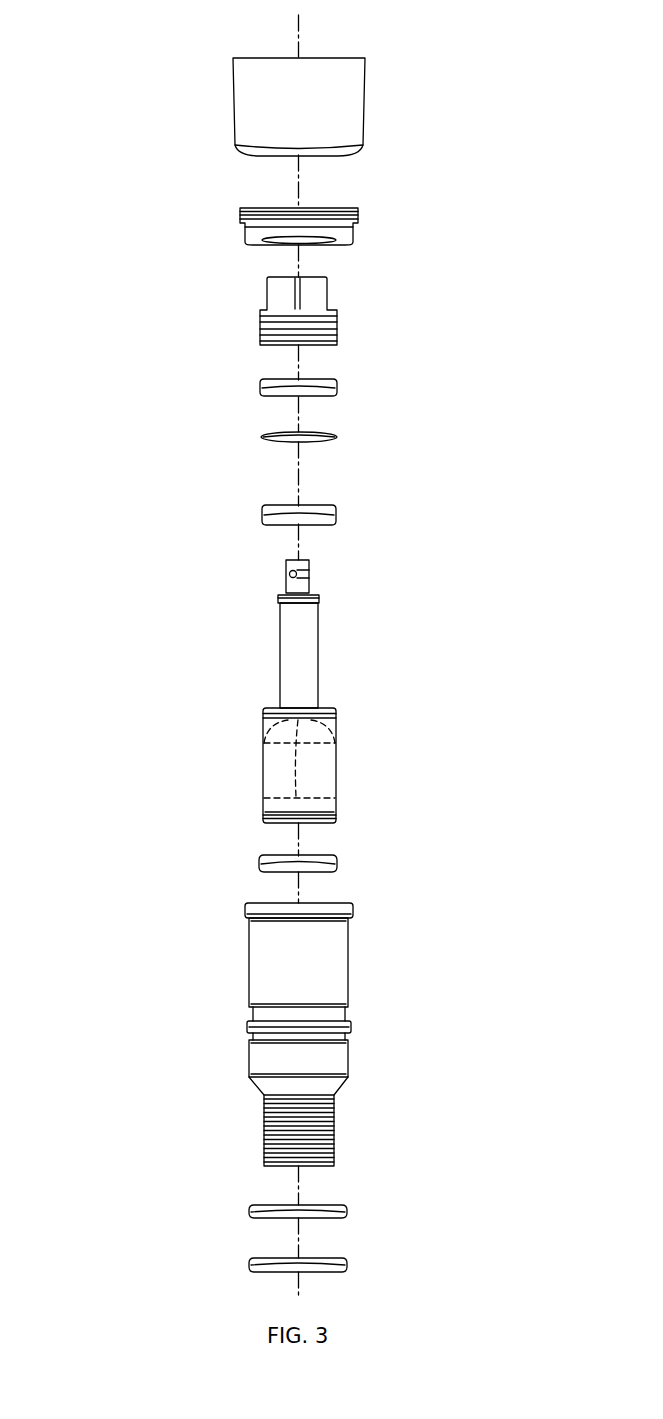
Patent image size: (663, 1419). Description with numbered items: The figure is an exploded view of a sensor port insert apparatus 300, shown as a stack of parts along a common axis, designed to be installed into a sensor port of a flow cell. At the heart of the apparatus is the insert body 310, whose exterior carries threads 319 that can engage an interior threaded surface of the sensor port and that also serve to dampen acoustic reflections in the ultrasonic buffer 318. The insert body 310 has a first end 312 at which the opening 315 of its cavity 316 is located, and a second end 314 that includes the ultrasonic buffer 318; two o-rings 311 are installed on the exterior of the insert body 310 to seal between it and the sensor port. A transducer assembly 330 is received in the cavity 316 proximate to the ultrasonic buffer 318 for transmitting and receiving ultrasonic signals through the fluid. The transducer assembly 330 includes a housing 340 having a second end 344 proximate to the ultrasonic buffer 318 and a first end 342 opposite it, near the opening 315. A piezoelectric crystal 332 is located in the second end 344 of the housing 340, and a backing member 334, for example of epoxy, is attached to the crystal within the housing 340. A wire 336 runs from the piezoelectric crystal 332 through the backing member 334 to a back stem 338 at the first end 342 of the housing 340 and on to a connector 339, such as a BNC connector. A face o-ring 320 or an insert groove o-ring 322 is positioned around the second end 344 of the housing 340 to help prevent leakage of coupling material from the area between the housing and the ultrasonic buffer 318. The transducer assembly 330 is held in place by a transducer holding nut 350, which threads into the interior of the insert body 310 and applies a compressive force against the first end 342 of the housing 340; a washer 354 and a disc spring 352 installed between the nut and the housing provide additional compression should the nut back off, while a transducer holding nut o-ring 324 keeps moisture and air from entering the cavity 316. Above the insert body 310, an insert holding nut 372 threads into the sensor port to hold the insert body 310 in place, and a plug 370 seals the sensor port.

The sensor port insert apparatus 300 is at (110, 62).
The plug 370 is at (345, 98).
The insert holding nut 372 is at (340, 228).
The transducer holding nut 350 is at (316, 293).
The transducer holding nut o-ring 324 is at (338, 385).
The disc spring 352 is at (338, 437).
The washer 354 is at (337, 513).
The connector 339 is at (310, 575).
The back stem 338 is at (308, 645).
The transducer assembly 330 is at (332, 767).
The backing member 334 is at (330, 771).
The wire 336 is at (297, 778).
The housing 340 is at (338, 748).
The first end of the housing 342 is at (262, 722).
The second end of the housing 344 is at (262, 820).
The piezoelectric crystal 332 is at (320, 807).
The face o-ring 320 is at (403, 855).
The insert groove o-ring 322 is at (338, 860).
The opening 315 is at (319, 1016).
The cavity 316 is at (319, 1016).
The first end of the insert body 312 is at (246, 911).
The insert body 310 is at (332, 958).
The threads 319 is at (334, 1110).
The ultrasonic buffer 318 is at (303, 1121).
The second end of the insert body 314 is at (303, 1121).
The o-rings 311 is at (349, 1211).